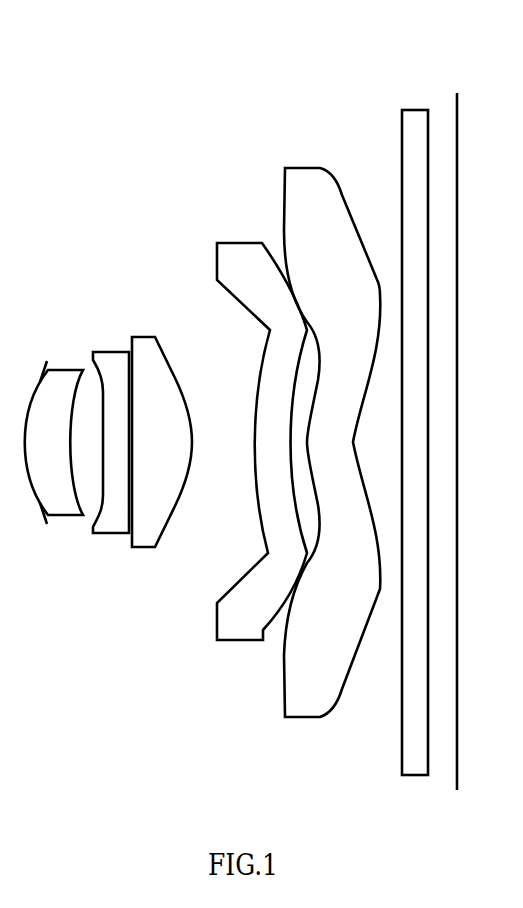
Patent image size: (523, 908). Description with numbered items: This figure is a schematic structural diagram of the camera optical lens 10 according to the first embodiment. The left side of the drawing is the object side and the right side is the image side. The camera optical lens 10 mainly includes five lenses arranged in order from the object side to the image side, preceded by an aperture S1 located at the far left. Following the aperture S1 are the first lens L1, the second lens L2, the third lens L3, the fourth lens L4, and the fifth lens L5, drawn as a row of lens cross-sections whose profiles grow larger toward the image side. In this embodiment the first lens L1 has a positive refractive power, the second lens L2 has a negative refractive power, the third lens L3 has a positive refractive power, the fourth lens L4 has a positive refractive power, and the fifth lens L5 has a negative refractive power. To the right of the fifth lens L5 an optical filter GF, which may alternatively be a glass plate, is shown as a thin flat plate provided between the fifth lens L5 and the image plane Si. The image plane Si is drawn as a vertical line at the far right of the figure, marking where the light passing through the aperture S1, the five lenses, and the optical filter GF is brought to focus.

The camera optical lens 10 is at (265, 39).
The aperture S1 is at (41, 431).
The first lens L1 is at (54, 429).
The second lens L2 is at (111, 429).
The third lens L3 is at (162, 430).
The fourth lens L4 is at (262, 429).
The fifth lens L5 is at (332, 428).
The optical filter GF is at (415, 429).
The image plane Si is at (456, 429).